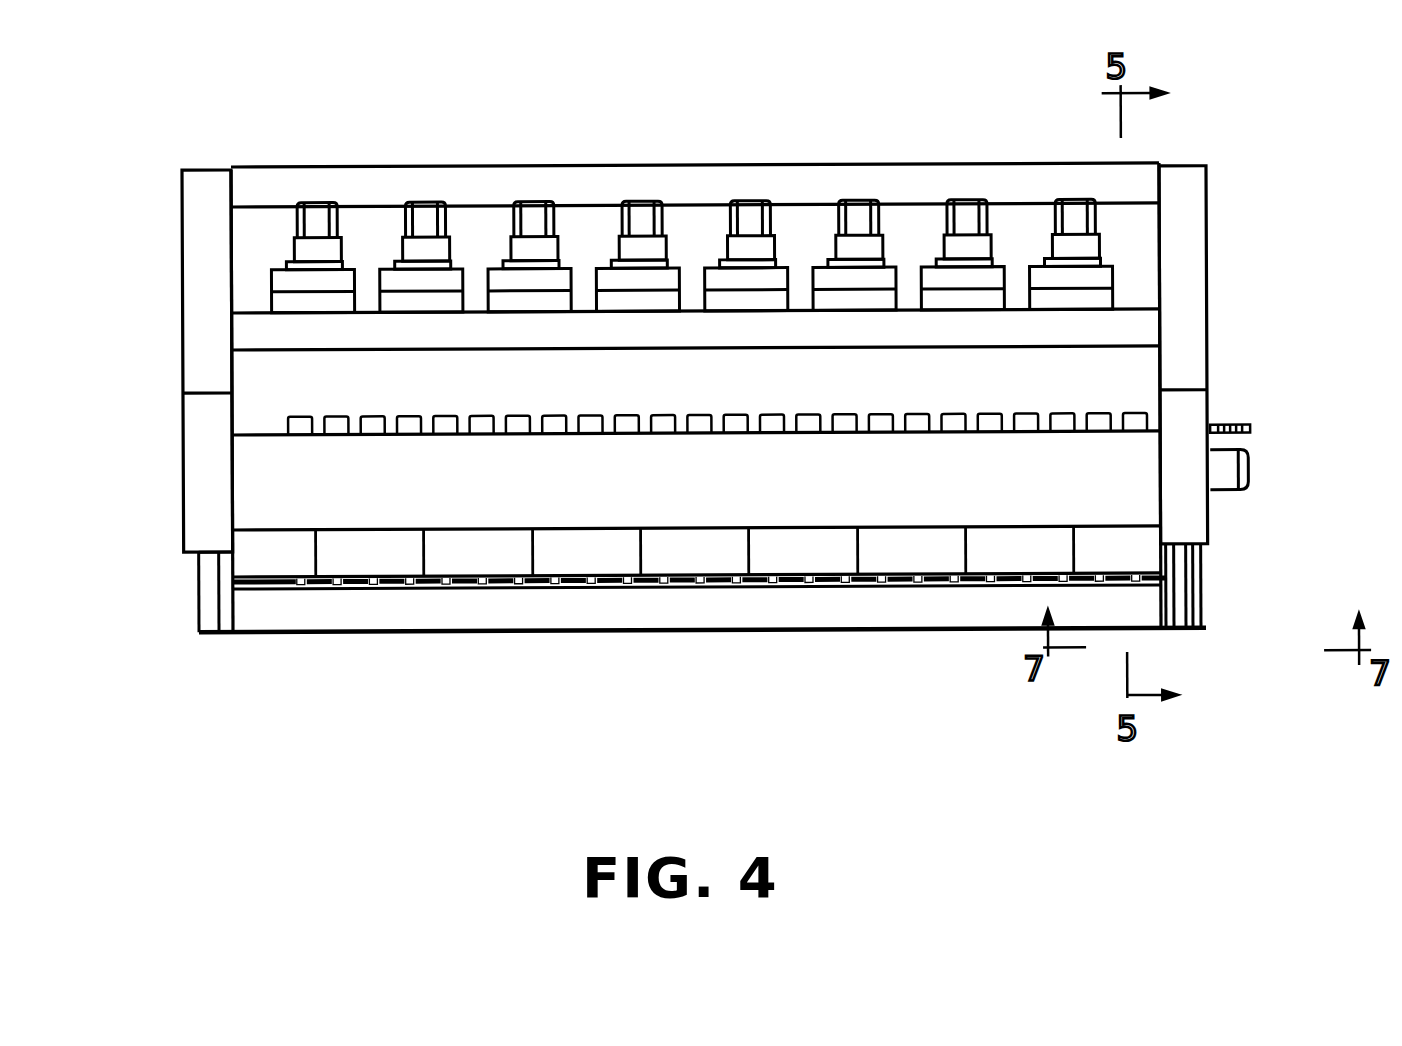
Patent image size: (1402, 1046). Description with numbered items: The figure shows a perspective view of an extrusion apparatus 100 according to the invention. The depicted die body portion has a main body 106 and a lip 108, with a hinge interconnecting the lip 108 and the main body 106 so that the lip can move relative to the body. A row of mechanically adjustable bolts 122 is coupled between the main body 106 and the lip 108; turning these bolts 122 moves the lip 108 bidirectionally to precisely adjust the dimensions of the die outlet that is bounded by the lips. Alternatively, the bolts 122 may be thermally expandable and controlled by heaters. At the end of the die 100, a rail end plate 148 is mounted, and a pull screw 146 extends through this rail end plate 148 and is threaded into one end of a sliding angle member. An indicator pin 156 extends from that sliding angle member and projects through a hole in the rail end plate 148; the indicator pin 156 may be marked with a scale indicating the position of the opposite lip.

The extrusion apparatus 100 is at (247, 654).
The main body 106 is at (250, 505).
The lip 108 is at (1133, 612).
The mechanically adjustable bolts 122 is at (372, 415).
The pull screw 146 is at (1225, 491).
The rail end plate 148 is at (1195, 307).
The indicator pin 156 is at (1250, 432).